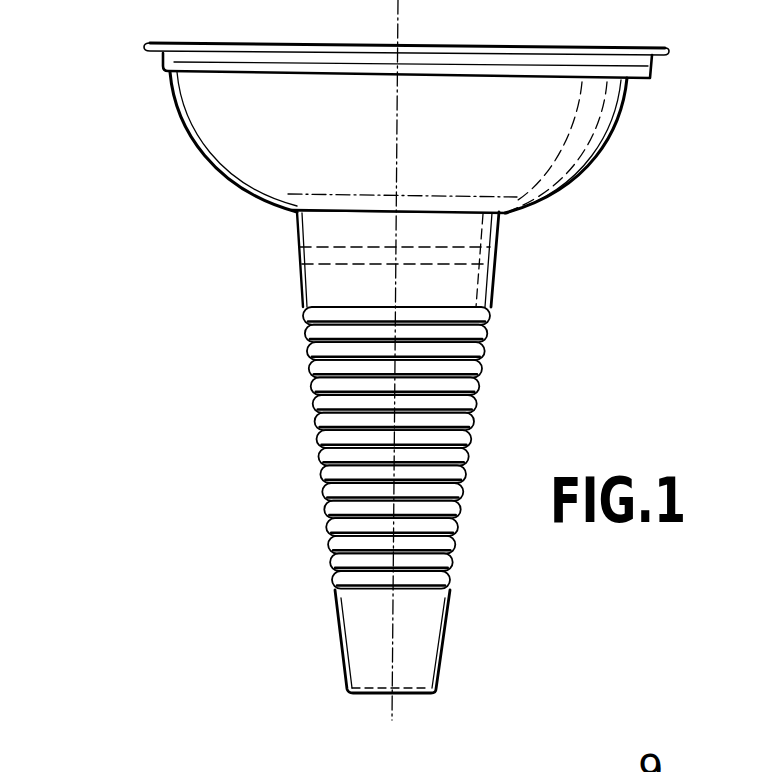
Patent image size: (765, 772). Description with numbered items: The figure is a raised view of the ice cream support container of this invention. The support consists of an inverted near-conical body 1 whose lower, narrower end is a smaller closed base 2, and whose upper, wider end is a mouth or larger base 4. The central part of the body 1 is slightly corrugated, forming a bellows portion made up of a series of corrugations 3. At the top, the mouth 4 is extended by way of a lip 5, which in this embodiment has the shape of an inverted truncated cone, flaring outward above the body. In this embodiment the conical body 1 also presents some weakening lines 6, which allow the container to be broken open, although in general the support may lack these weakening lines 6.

The inverted near-conical body 1 is at (250, 384).
The smaller or lower closed base 2 is at (365, 695).
The corrugations 3 is at (487, 383).
The mouth or larger base 4 is at (506, 218).
The lip 5 is at (195, 172).
The weakening lines 6 is at (482, 258).